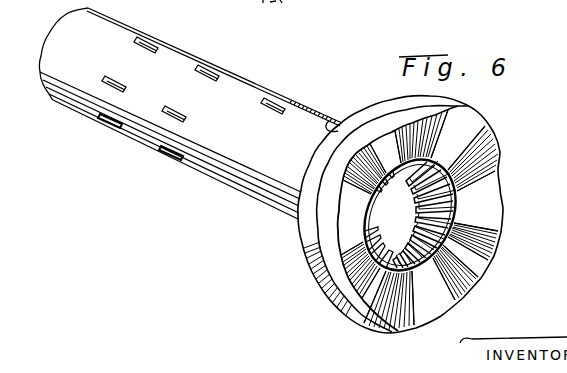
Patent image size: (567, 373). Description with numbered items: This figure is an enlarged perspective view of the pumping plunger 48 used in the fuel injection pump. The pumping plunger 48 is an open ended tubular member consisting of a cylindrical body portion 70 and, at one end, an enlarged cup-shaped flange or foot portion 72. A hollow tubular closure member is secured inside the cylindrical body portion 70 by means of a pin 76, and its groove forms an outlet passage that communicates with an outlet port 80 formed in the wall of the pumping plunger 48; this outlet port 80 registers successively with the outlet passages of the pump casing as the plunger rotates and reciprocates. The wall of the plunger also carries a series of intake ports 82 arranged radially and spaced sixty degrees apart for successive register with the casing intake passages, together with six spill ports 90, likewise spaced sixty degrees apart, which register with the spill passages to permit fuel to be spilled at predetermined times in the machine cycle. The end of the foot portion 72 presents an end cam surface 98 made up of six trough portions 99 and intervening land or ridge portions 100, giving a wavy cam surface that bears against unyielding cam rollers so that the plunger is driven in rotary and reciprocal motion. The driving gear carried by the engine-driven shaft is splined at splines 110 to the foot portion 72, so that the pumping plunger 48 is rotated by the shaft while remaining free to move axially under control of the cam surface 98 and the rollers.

The pumping plunger 48 is at (58, 105).
The cylindrical body portion 70 is at (301, 109).
The foot portion 72 is at (310, 275).
The pin 76 is at (334, 123).
The outlet port 80 is at (270, 98).
The intake ports 82 is at (168, 109).
The spill ports 90 is at (147, 40).
The end cam surface 98 is at (491, 226).
The trough portions 99 is at (492, 181).
The land portions 100 is at (487, 148).
The splines 110 is at (417, 216).